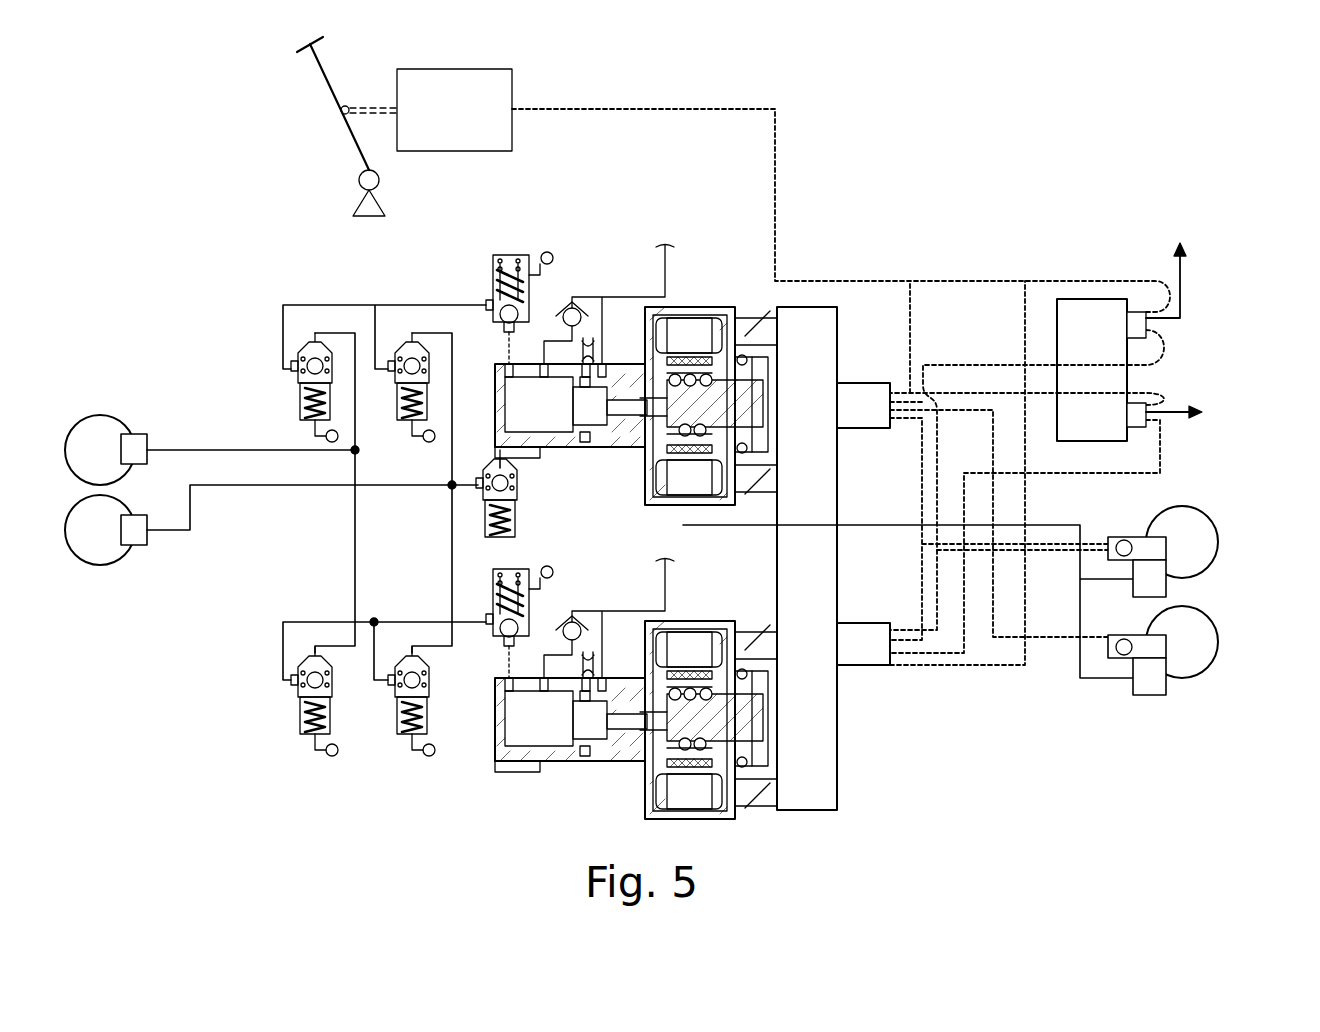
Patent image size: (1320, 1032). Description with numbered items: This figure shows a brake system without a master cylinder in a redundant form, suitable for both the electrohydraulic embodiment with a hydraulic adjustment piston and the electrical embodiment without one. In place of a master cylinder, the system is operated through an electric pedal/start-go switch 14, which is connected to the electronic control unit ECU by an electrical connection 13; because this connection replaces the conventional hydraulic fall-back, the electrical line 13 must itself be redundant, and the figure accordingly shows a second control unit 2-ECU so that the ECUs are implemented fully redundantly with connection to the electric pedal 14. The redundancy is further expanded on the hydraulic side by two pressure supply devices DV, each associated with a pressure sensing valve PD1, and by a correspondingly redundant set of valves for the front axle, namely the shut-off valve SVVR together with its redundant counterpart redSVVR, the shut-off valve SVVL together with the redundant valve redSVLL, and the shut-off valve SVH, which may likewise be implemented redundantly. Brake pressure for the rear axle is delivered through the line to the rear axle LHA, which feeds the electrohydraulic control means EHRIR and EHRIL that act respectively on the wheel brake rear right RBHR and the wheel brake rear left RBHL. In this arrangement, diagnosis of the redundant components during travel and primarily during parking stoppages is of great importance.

The electric pedal/start-go switch 14 is at (503, 92).
The electrical connection of sensor ECU to ECU 13 is at (900, 385).
The pressure sensor valve PD1 is at (503, 255).
The pressure supply DV is at (553, 438).
The electronic open-loop and closed-loop control unit ECU is at (820, 700).
The second electronic control unit 2-ECU is at (1113, 383).
The shut-off valve for the front axle, right SVVR is at (275, 387).
The switching valve front left SVVL is at (403, 402).
The shut-off valve SVH is at (478, 525).
The redundant shut-off valve for the front axle, right redSVVR is at (312, 736).
The redundant switching valve rear left redSVLL is at (410, 736).
The line to the rear axle LHA is at (703, 530).
The electro-hydraulic rear brake unit right EHRIR is at (1157, 548).
The electro-hydraulic rear brake unit left EHRIL is at (1157, 652).
The wheel brake rear right RBHR is at (1216, 555).
The wheel brake rear left RBHL is at (1213, 645).